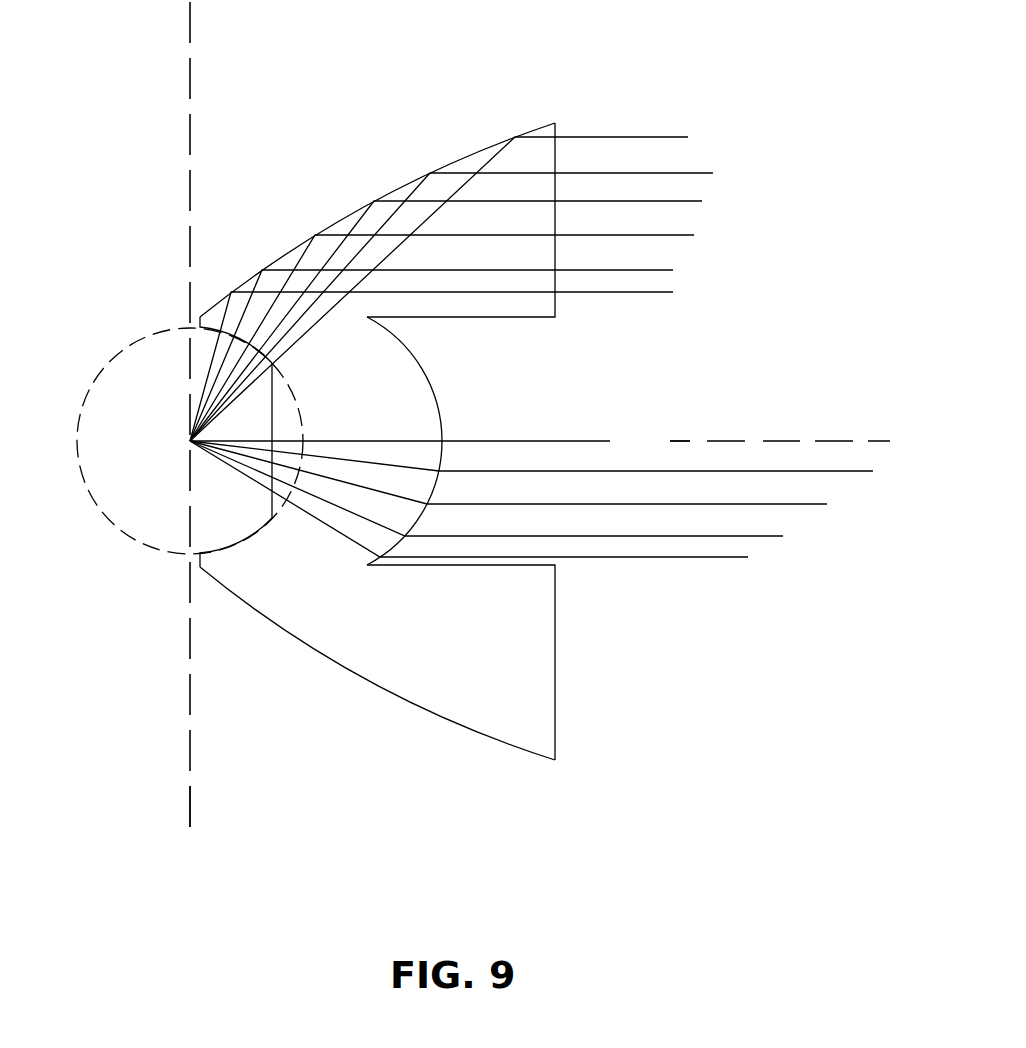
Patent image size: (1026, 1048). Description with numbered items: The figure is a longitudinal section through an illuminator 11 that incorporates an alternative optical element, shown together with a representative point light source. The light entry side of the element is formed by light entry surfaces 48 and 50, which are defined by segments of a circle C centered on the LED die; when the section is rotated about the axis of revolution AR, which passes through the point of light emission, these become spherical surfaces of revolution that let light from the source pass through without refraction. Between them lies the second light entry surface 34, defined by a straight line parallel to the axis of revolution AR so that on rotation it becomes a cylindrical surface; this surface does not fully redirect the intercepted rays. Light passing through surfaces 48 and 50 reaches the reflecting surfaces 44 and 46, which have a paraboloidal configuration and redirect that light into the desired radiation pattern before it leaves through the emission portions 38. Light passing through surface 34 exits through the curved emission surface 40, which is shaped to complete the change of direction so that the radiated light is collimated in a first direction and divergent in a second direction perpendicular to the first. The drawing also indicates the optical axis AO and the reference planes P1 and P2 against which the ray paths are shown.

The illuminator 11 is at (419, 406).
The second light entry surface 34 is at (272, 410).
The emission portions 38 is at (555, 217).
The curved emission surface 40 is at (437, 398).
The reflecting surface 44 is at (278, 255).
The reflecting surface 46 is at (253, 608).
The light entry surface 48 is at (190, 352).
The light entry surface 50 is at (228, 548).
The circle C is at (78, 438).
The reference plane P1 is at (190, 70).
The reference plane P2 is at (690, 443).
The optical axis AO is at (559, 452).
The axis of revolution AR is at (214, 817).